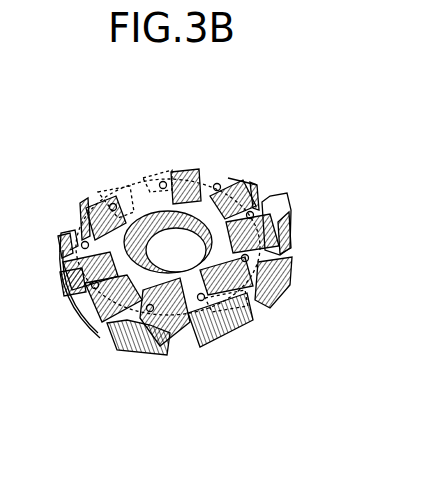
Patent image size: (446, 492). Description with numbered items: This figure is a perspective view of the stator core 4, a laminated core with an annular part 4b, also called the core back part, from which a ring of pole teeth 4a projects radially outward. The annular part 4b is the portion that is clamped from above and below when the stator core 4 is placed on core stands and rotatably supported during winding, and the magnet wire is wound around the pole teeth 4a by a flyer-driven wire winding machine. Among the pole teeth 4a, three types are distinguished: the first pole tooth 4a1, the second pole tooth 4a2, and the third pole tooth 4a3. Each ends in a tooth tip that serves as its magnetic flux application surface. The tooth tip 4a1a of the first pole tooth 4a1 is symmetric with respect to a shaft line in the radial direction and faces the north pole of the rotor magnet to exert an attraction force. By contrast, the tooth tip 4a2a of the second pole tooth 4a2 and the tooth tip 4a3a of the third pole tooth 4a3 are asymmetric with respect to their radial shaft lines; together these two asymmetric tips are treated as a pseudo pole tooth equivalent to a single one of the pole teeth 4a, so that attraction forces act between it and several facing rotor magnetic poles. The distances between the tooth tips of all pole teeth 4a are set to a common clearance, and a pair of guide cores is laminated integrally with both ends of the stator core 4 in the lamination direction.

The stator core 4 is at (76, 200).
The pole teeth 4a is at (72, 133).
The first pole tooth 4a1 is at (105, 203).
The second pole tooth 4a2 is at (163, 180).
The third pole tooth 4a3 is at (225, 178).
The tooth tip 4a1a is at (283, 206).
The tooth tip 4a2a is at (282, 270).
The tooth tip 4a3a is at (240, 327).
The annular part 4b is at (171, 278).